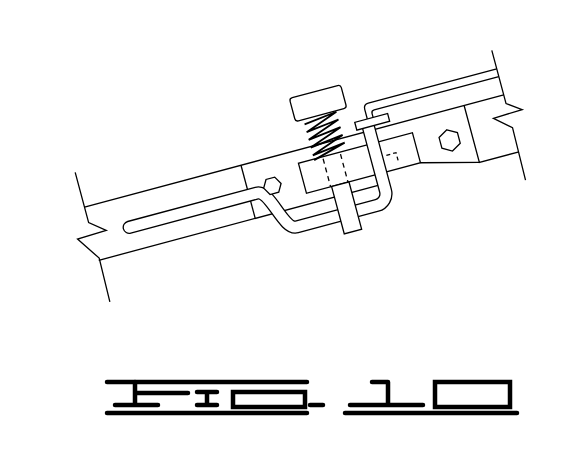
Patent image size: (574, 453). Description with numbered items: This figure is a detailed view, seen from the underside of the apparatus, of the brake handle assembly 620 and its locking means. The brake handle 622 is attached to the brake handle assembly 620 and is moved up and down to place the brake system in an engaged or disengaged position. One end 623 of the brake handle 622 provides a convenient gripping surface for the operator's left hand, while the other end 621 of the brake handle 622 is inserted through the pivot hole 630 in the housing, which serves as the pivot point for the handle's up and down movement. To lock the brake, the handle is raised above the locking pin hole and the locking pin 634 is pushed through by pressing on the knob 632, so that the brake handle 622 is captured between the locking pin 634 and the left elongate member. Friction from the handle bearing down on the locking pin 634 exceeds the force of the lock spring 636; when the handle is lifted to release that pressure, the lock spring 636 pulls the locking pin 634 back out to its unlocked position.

The brake handle assembly 620 is at (166, 88).
The end of brake handle 621 is at (392, 130).
The brake handle 622 is at (153, 222).
The end of brake handle 623 is at (156, 262).
The pivot hole 630 is at (427, 180).
The knob 632 is at (302, 93).
The locking pin 634 is at (352, 238).
The lock spring 636 is at (310, 142).